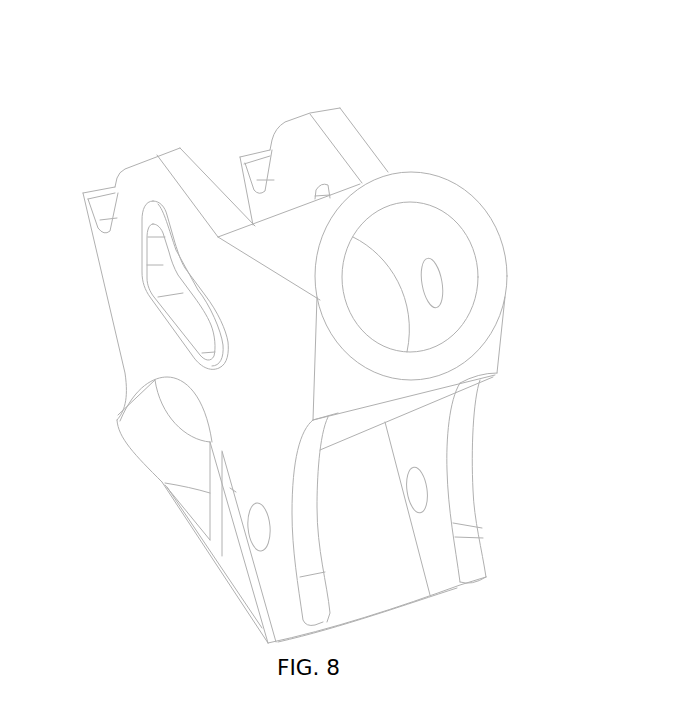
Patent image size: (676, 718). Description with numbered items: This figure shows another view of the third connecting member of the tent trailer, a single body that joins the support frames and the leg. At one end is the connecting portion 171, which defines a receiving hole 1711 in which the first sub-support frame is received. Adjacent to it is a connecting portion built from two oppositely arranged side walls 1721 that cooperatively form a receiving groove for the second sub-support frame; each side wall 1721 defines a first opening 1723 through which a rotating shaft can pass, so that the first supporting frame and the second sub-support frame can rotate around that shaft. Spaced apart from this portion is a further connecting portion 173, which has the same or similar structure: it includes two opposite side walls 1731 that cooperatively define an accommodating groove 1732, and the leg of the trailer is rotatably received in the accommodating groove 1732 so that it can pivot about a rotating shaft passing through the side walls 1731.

The connecting portion 171 is at (507, 297).
The receiving hole 1711 is at (420, 237).
The side wall 1721 is at (310, 150).
The first opening 1723 is at (165, 263).
The connecting portion 173 is at (483, 525).
The side wall 1731 is at (455, 568).
The accommodating groove 1732 is at (350, 532).